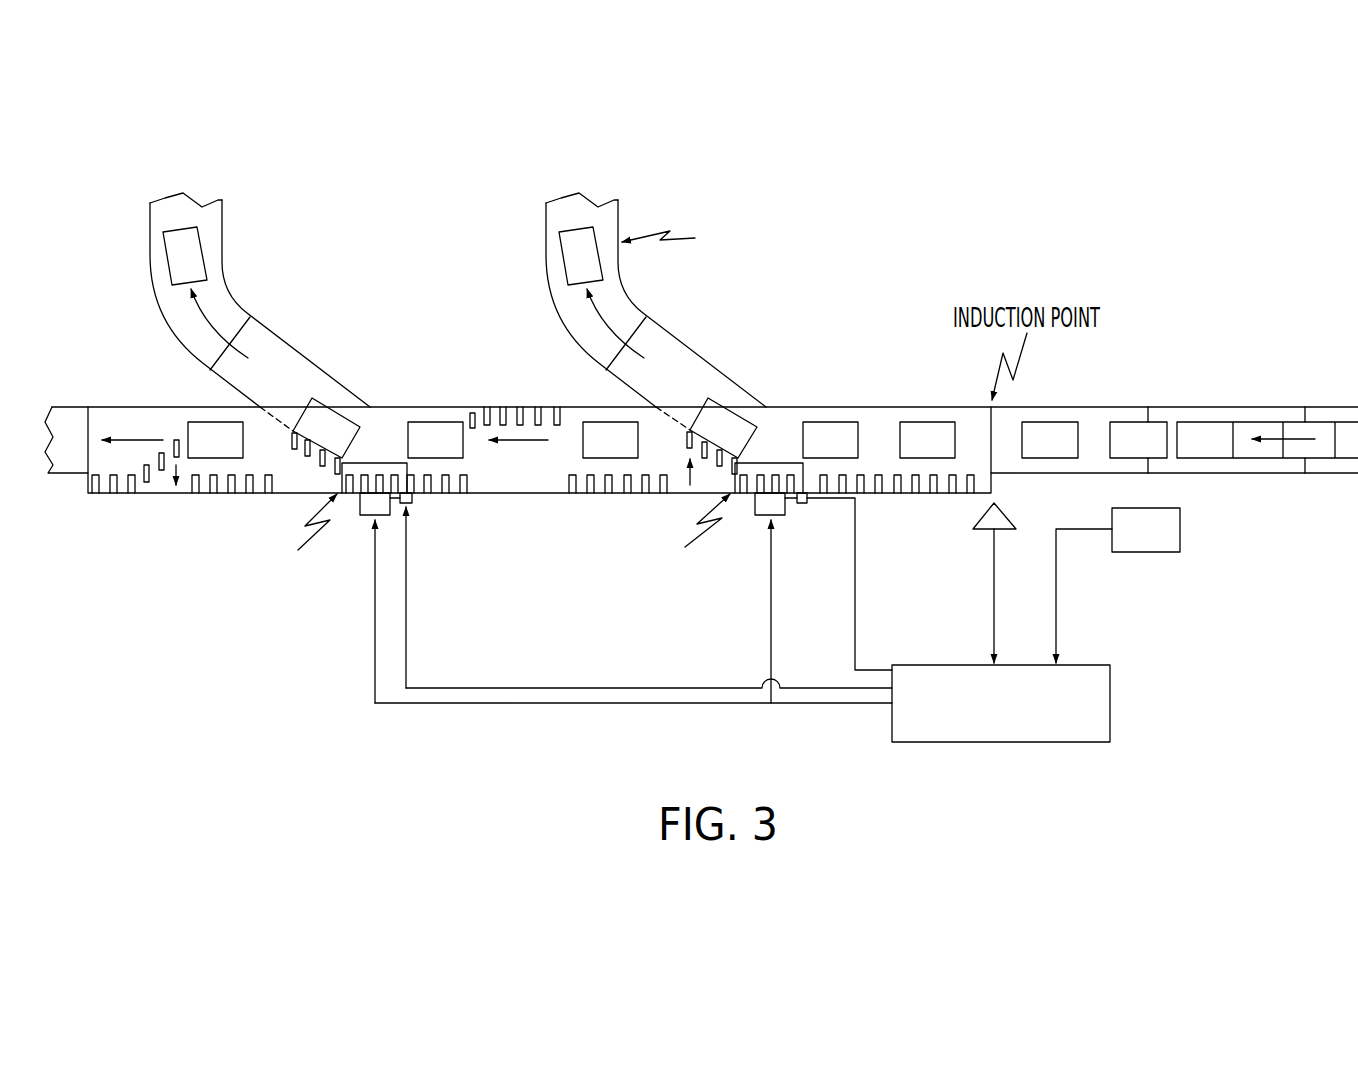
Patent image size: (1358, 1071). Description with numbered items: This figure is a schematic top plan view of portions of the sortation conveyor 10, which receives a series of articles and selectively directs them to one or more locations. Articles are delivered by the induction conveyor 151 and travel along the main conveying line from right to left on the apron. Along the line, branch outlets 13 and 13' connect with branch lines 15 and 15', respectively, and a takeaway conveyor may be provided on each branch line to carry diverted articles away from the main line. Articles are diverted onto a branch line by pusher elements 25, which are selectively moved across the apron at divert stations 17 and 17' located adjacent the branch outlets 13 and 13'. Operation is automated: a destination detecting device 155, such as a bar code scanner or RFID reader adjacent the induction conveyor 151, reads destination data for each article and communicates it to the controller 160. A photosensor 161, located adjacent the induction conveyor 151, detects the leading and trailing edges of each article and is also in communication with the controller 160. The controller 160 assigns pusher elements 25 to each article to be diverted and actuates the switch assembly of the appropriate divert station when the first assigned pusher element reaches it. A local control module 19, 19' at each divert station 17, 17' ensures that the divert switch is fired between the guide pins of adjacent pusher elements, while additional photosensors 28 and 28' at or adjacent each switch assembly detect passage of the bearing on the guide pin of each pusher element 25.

The sortation conveyor 10 is at (930, 240).
The branch outlet 13 is at (716, 408).
The branch outlet 13' is at (321, 408).
The branch line 15 is at (646, 300).
The branch line 15' is at (260, 300).
The divert station 17 is at (725, 544).
The divert station 17' is at (381, 540).
The local control module 19 is at (760, 598).
The local control module 19' is at (613, 598).
The pusher element 25 is at (503, 407).
The photosensor 28 is at (838, 581).
The photosensor 28' is at (641, 590).
The induction conveyor 151 is at (1156, 395).
The destination detecting device 155 is at (1168, 543).
The controller 160 is at (1110, 702).
The photosensor 161 is at (1016, 513).